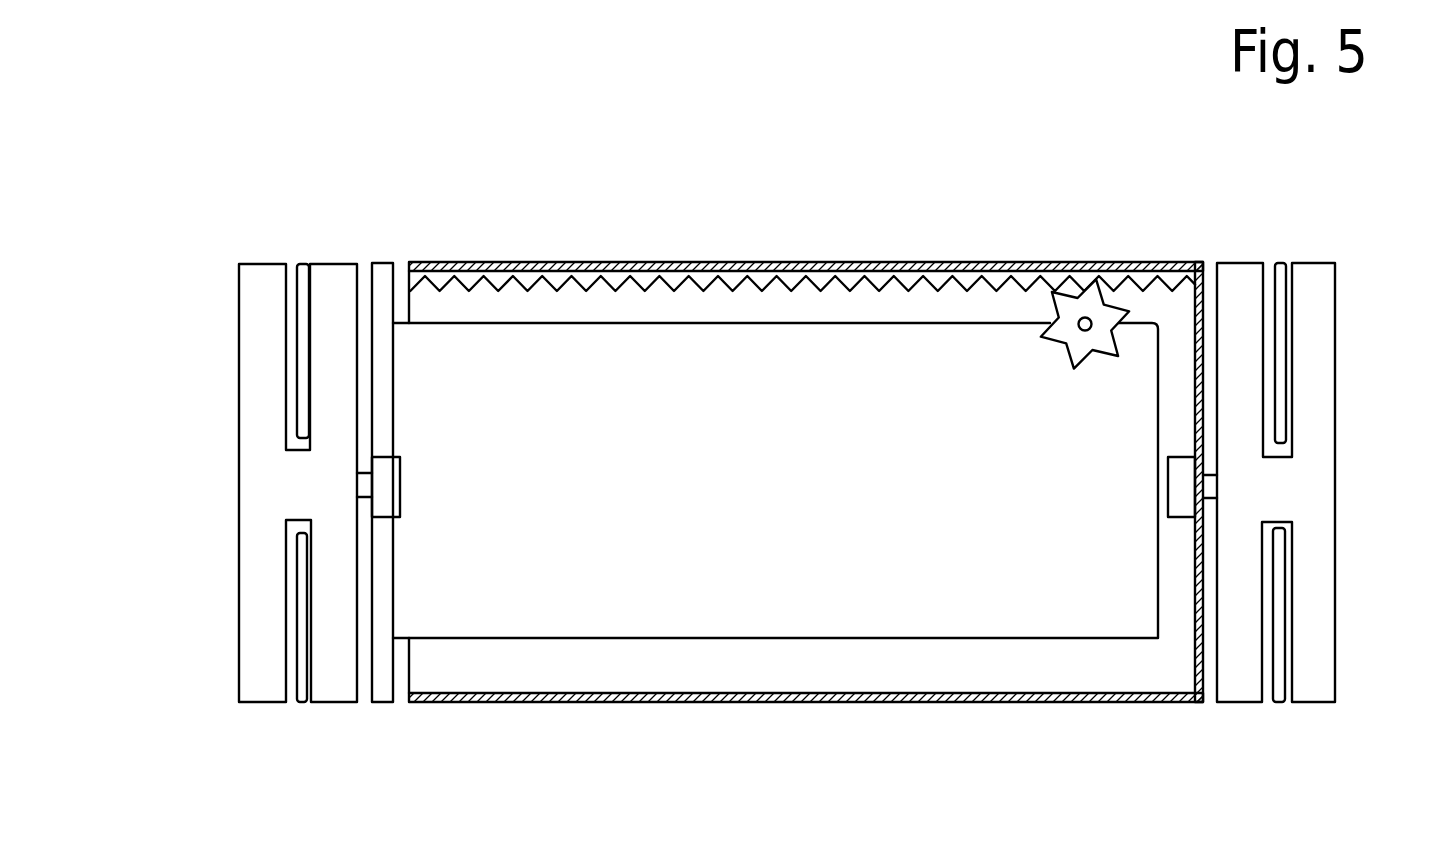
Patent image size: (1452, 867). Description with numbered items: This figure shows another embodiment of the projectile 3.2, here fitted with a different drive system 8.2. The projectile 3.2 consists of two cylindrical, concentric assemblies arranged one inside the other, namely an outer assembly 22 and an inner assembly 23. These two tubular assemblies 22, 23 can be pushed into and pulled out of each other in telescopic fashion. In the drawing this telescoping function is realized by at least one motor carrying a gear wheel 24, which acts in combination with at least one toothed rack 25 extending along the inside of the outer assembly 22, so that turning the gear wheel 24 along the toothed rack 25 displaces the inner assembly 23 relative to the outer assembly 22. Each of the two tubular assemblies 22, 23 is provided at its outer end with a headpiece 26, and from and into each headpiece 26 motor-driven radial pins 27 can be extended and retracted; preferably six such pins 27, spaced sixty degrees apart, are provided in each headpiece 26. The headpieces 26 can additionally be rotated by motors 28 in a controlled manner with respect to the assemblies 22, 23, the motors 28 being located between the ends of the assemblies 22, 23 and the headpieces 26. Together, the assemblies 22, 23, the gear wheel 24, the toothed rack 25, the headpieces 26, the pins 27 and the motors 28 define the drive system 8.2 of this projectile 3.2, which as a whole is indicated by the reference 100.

The outer assembly 22 is at (1093, 703).
The inner assembly 23 is at (527, 368).
The gear wheel 24 is at (1100, 292).
The toothed rack 25 is at (822, 276).
The headpiece 26 is at (263, 280).
The radial pin 27 is at (285, 372).
The motor 28 is at (395, 513).
The drive system 8.2 is at (215, 272).
The projectile 3.2 is at (1002, 216).
The device 100 is at (1262, 208).